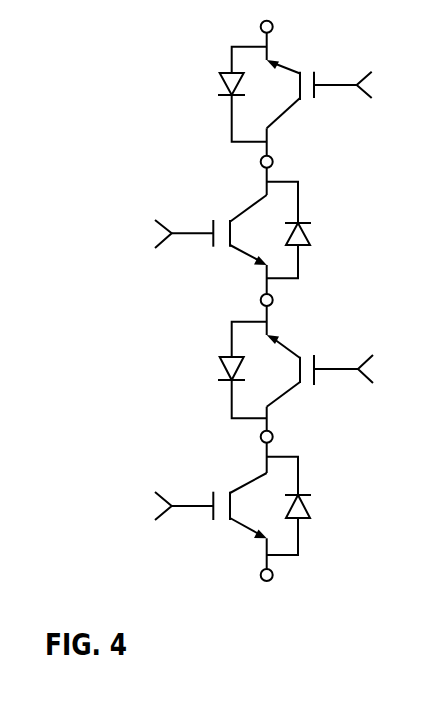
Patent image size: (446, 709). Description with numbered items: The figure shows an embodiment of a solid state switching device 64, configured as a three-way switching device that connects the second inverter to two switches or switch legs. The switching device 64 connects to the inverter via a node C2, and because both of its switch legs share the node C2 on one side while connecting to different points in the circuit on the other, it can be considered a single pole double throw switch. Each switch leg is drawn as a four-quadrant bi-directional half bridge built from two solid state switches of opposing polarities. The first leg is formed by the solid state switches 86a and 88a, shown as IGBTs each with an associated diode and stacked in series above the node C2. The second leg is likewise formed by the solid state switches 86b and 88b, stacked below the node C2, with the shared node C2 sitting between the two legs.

The switching device 64 is at (86, 261).
The solid state switch 86a is at (313, 75).
The solid state switch 88a is at (299, 203).
The solid state switch 86b is at (313, 362).
The solid state switch 88b is at (298, 475).
The node C2 is at (273, 301).